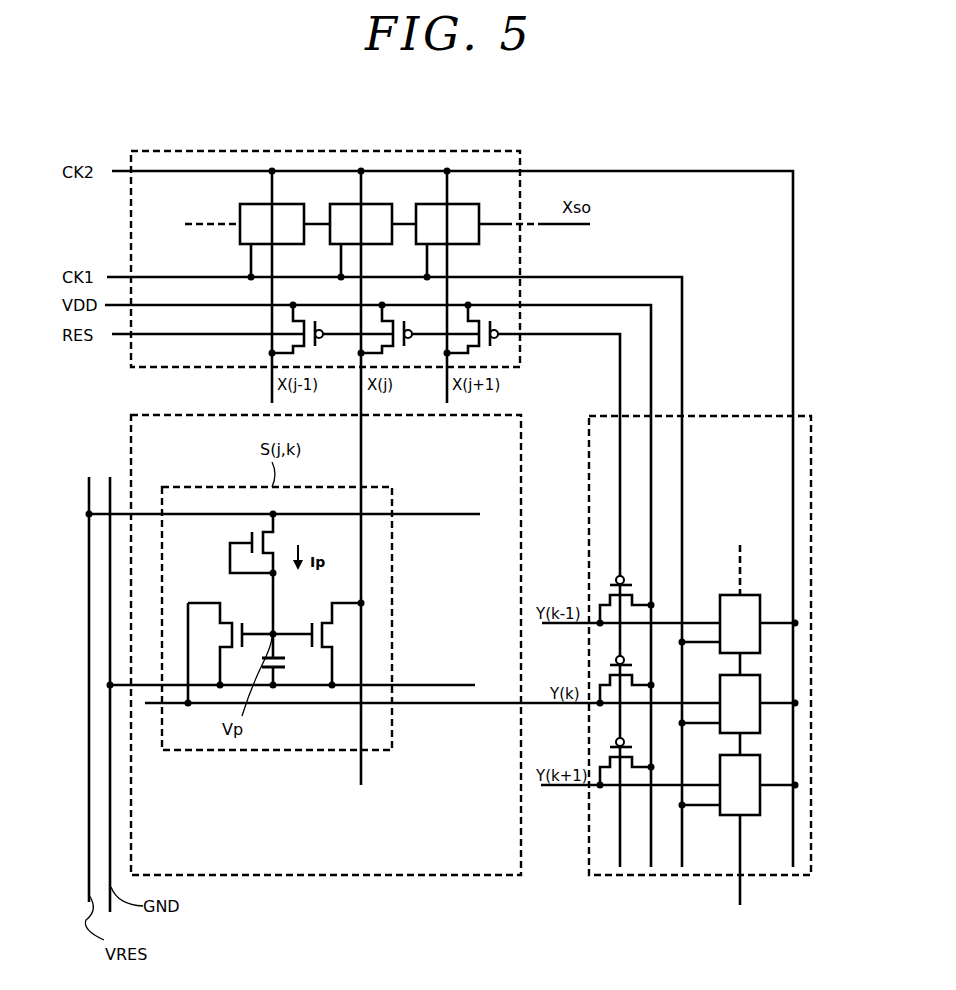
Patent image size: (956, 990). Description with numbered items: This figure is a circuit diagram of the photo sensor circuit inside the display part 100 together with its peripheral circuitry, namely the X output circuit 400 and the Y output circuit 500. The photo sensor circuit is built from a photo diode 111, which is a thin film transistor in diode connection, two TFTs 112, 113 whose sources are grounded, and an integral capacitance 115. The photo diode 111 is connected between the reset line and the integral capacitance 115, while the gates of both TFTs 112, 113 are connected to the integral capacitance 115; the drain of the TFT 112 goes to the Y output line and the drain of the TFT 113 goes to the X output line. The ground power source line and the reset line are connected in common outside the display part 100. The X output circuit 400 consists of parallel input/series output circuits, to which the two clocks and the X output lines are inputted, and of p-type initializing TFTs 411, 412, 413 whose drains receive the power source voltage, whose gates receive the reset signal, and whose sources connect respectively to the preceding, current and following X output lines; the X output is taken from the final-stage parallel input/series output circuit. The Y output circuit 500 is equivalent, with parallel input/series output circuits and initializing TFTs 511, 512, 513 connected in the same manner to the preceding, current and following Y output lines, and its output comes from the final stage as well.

The display part 100 is at (460, 878).
The photo diode 111 is at (291, 544).
The TFT 112 is at (232, 622).
The TFT 113 is at (321, 621).
The integral capacitance 115 is at (282, 657).
The X output circuit 400 is at (288, 150).
The initializing TFT 411 is at (308, 322).
The initializing TFT 412 is at (387, 322).
The initializing TFT 413 is at (473, 322).
The Y output circuit 500 is at (742, 415).
The initializing TFT 511 is at (600, 598).
The initializing TFT 512 is at (600, 683).
The initializing TFT 513 is at (600, 764).